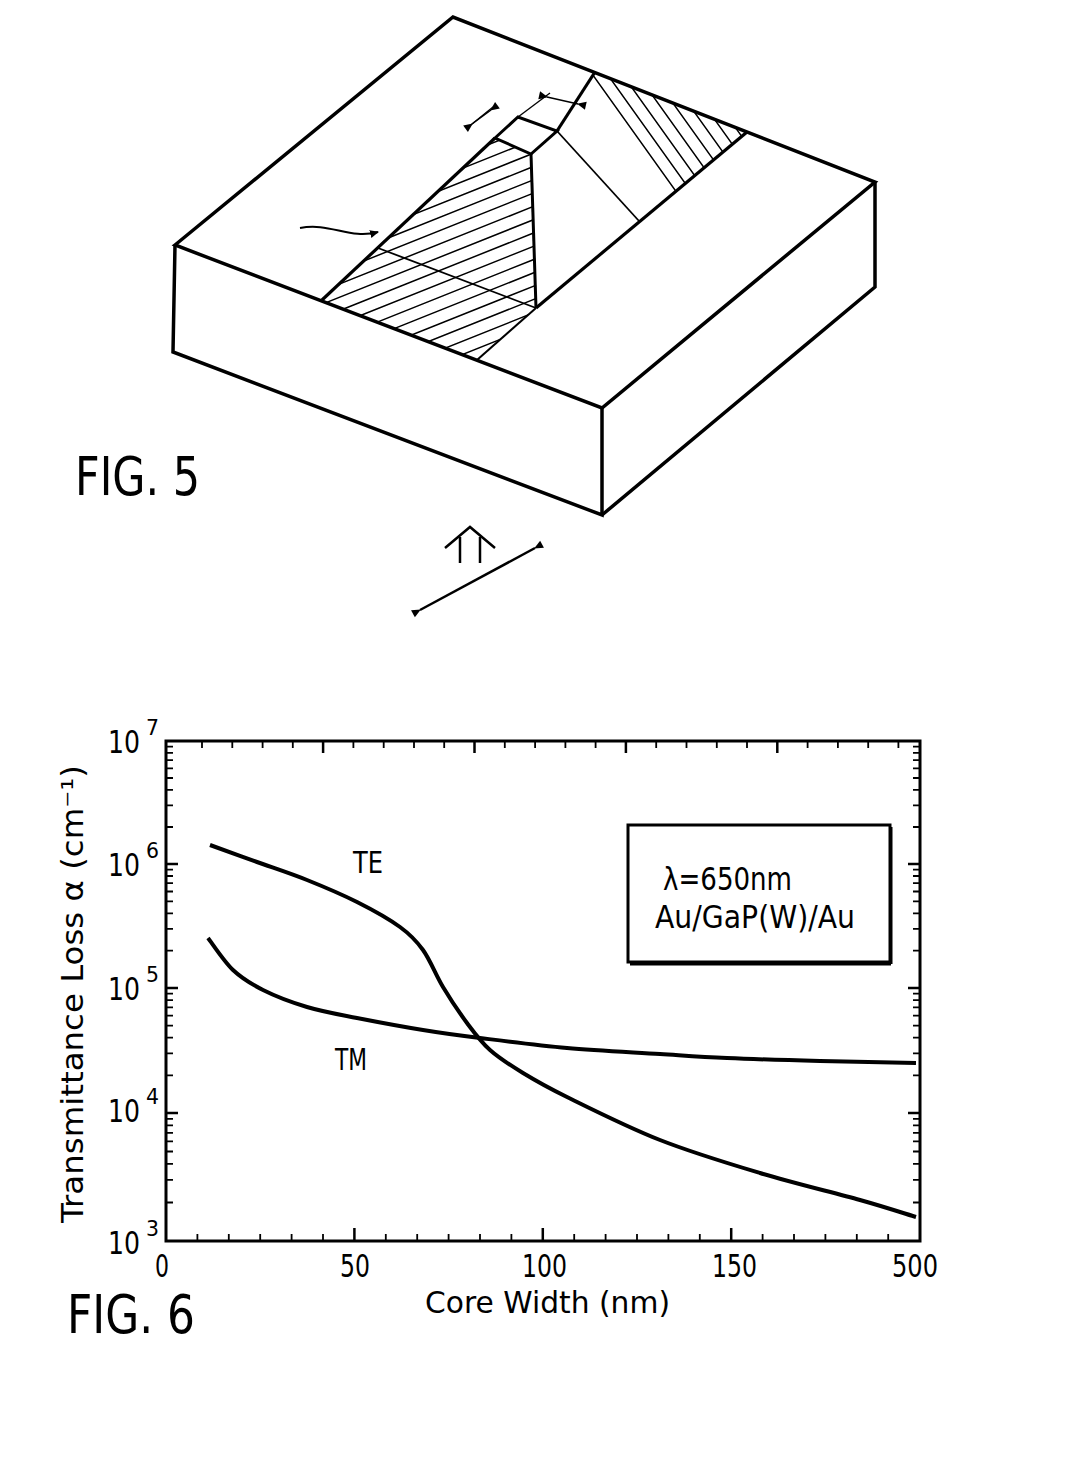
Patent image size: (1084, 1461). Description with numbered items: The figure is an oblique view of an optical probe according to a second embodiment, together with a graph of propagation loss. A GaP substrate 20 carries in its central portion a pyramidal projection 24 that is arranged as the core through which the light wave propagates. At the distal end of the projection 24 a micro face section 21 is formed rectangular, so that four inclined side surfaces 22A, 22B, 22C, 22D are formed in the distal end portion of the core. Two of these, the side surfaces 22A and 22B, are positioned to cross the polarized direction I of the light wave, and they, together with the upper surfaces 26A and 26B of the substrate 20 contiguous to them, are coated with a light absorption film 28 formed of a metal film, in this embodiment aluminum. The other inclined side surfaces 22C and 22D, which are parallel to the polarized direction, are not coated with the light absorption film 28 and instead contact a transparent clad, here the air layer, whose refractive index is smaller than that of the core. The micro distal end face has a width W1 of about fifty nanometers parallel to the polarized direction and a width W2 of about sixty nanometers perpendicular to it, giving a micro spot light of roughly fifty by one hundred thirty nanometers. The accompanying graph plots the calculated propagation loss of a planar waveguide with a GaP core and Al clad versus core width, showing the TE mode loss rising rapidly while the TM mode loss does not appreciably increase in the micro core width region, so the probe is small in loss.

The GaP substrate 20 is at (870, 242).
The micro face section 21 is at (519, 126).
The inclined side surface 22A is at (402, 219).
The inclined side surface 22B is at (643, 203).
The inclined side surface 22C is at (462, 170).
The inclined side surface 22D is at (585, 262).
The pyramidal projection 24 is at (320, 232).
The upper surface of the substrate 26A is at (417, 334).
The upper surface of the substrate 26B is at (631, 102).
The light absorption film 28 is at (497, 327).
The width W1 is at (468, 121).
The width W2 is at (553, 98).
The polarized direction I is at (480, 578).